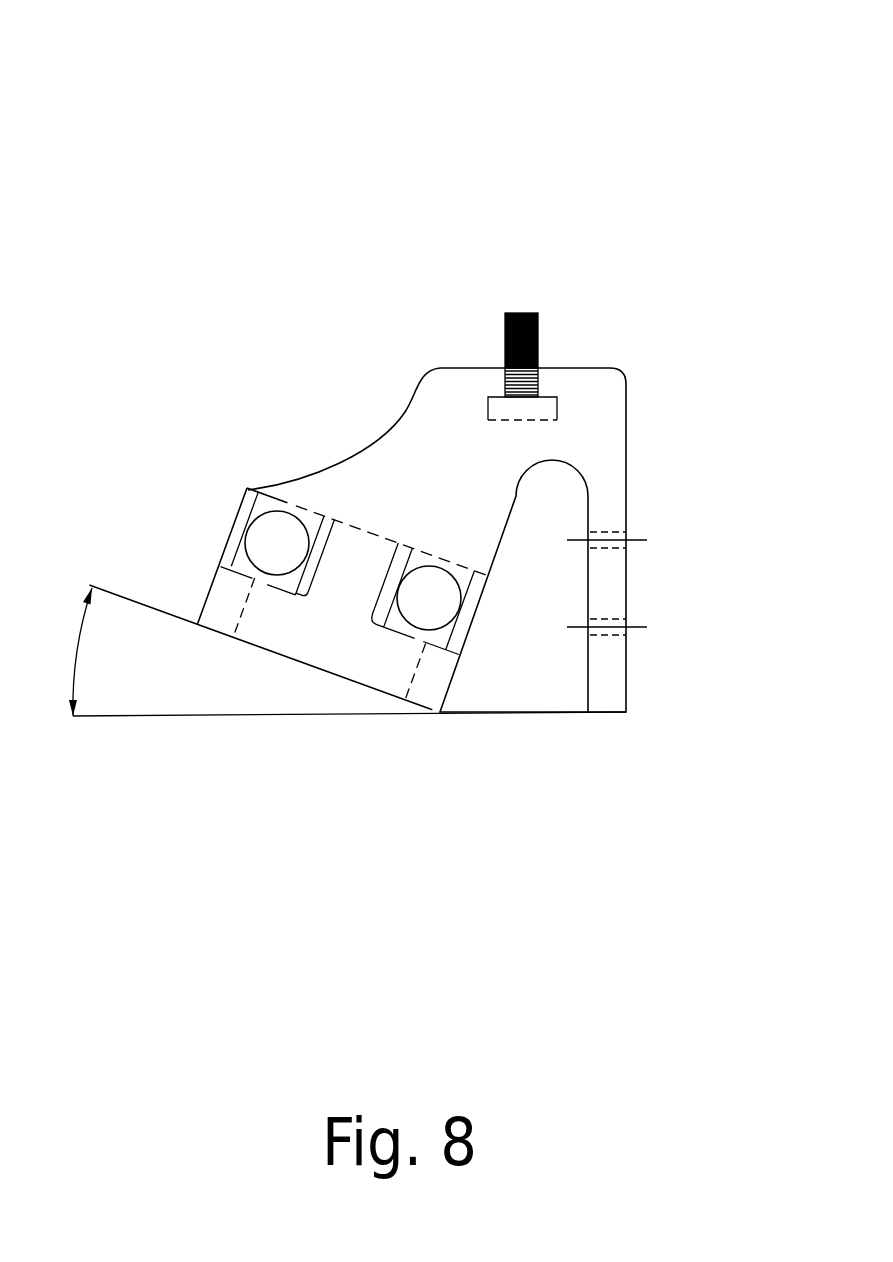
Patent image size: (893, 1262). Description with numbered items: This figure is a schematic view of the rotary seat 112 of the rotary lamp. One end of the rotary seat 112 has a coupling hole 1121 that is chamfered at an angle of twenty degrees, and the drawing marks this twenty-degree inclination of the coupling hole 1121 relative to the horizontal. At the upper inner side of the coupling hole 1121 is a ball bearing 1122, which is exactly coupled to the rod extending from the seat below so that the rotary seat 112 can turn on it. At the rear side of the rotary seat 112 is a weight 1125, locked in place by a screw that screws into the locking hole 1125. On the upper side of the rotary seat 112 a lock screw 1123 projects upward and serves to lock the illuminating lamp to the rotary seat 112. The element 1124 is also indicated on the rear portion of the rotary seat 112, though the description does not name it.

The rotary seat 112 is at (230, 133).
The coupling hole 1121 is at (293, 643).
The ball bearing 1122 is at (262, 542).
The lock screw 1123 is at (507, 316).
The pins 1124 is at (613, 628).
The weight 1125 is at (502, 688).